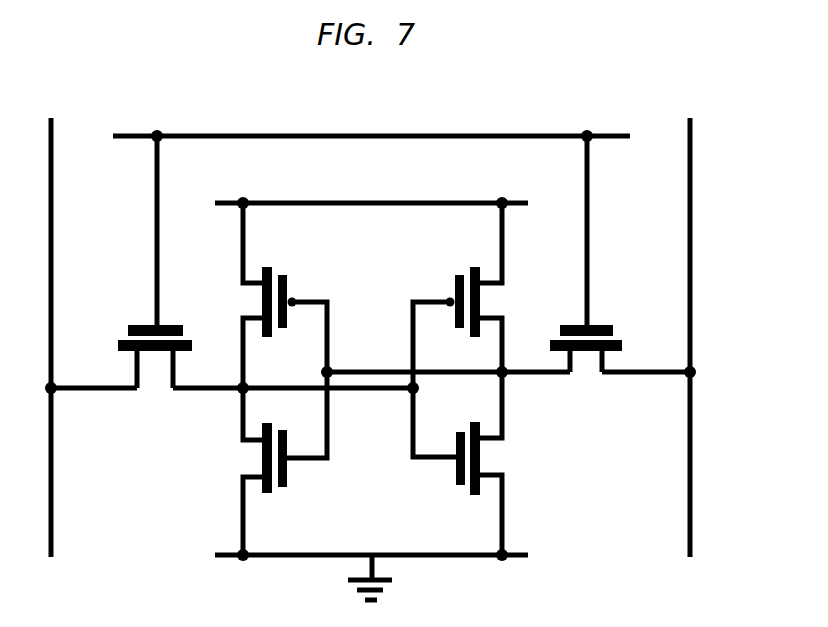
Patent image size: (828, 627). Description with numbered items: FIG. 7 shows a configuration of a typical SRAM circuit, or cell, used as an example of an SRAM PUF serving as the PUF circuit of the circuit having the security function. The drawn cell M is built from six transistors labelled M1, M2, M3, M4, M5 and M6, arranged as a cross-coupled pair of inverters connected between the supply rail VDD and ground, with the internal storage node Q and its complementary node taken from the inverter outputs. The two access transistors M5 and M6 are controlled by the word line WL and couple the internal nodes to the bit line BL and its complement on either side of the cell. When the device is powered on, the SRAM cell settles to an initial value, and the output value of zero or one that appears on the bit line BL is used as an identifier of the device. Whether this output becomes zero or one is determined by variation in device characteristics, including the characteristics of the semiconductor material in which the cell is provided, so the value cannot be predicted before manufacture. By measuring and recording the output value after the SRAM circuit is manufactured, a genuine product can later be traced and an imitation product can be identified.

The pull-down nMOS transistor M1 is at (285, 463).
The pull-up pMOS transistor M2 is at (286, 295).
The pull-down nMOS transistor M3 is at (457, 463).
The pull-up pMOS transistor M4 is at (457, 295).
The access transistor M5 is at (140, 262).
The access transistor M6 is at (598, 254).
The memory cell M is at (594, 102).
The word line WL is at (371, 122).
The supply voltage VDD is at (371, 186).
The bit line BL is at (370, 337).
The storage node / complementary storage node Q is at (370, 397).